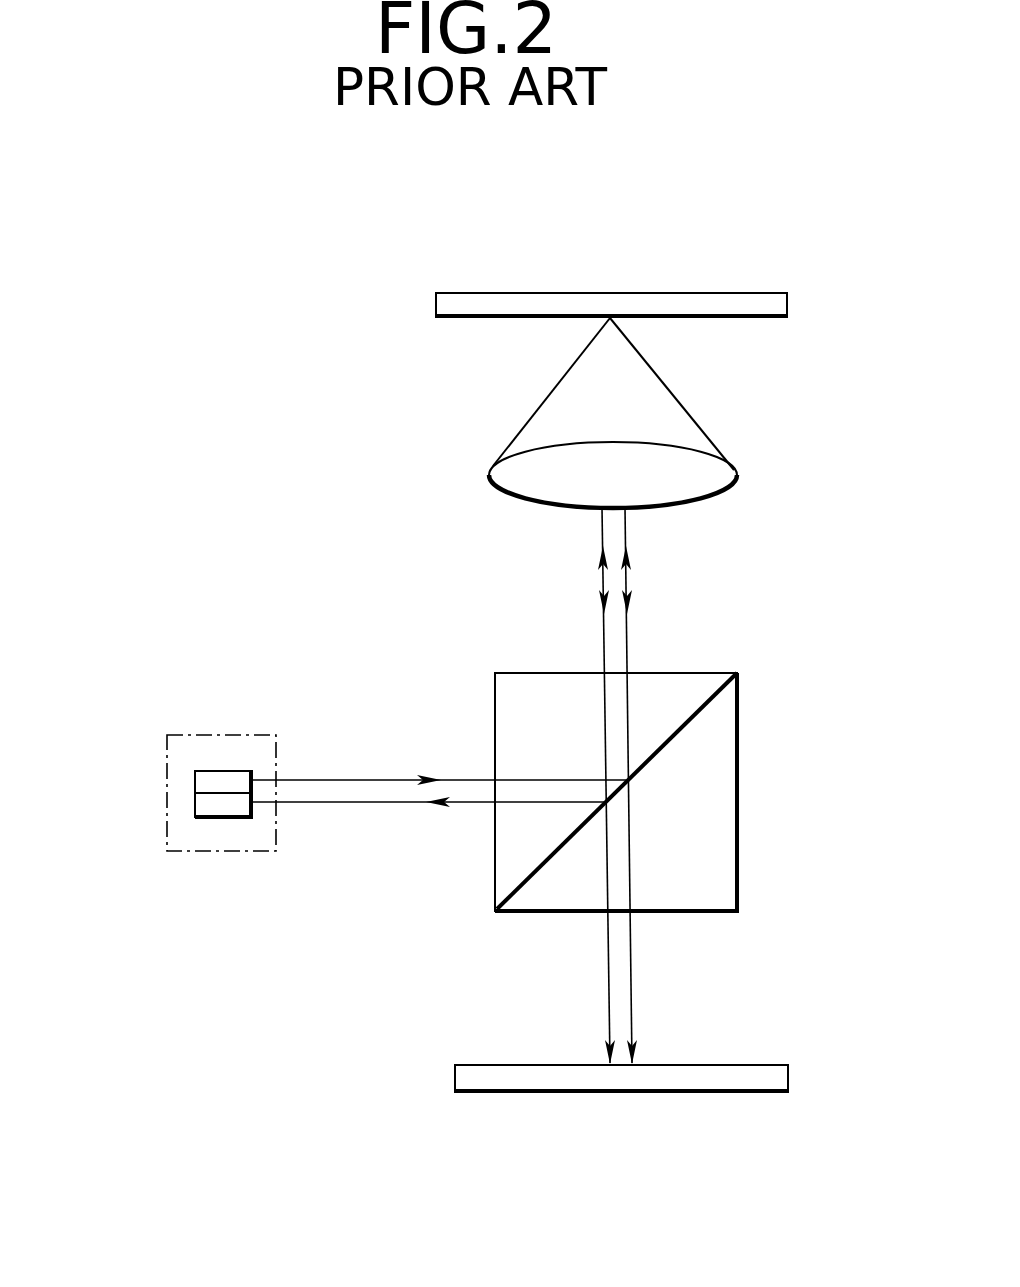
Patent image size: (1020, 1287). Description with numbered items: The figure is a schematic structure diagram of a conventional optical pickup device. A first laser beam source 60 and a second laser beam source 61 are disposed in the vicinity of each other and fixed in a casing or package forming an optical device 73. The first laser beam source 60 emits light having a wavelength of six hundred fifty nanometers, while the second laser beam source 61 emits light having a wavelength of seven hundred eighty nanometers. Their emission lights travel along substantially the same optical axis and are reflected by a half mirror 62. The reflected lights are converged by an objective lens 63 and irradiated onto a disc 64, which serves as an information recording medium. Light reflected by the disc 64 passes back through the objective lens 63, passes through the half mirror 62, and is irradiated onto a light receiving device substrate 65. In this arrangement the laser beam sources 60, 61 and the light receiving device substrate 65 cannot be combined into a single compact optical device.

The first laser beam source 60 is at (219, 777).
The second laser beam source 61 is at (222, 810).
The half mirror 62 is at (690, 720).
The objective lens 63 is at (737, 477).
The disc 64 is at (787, 296).
The light receiving device substrate 65 is at (777, 1075).
The optical device 73 is at (167, 764).